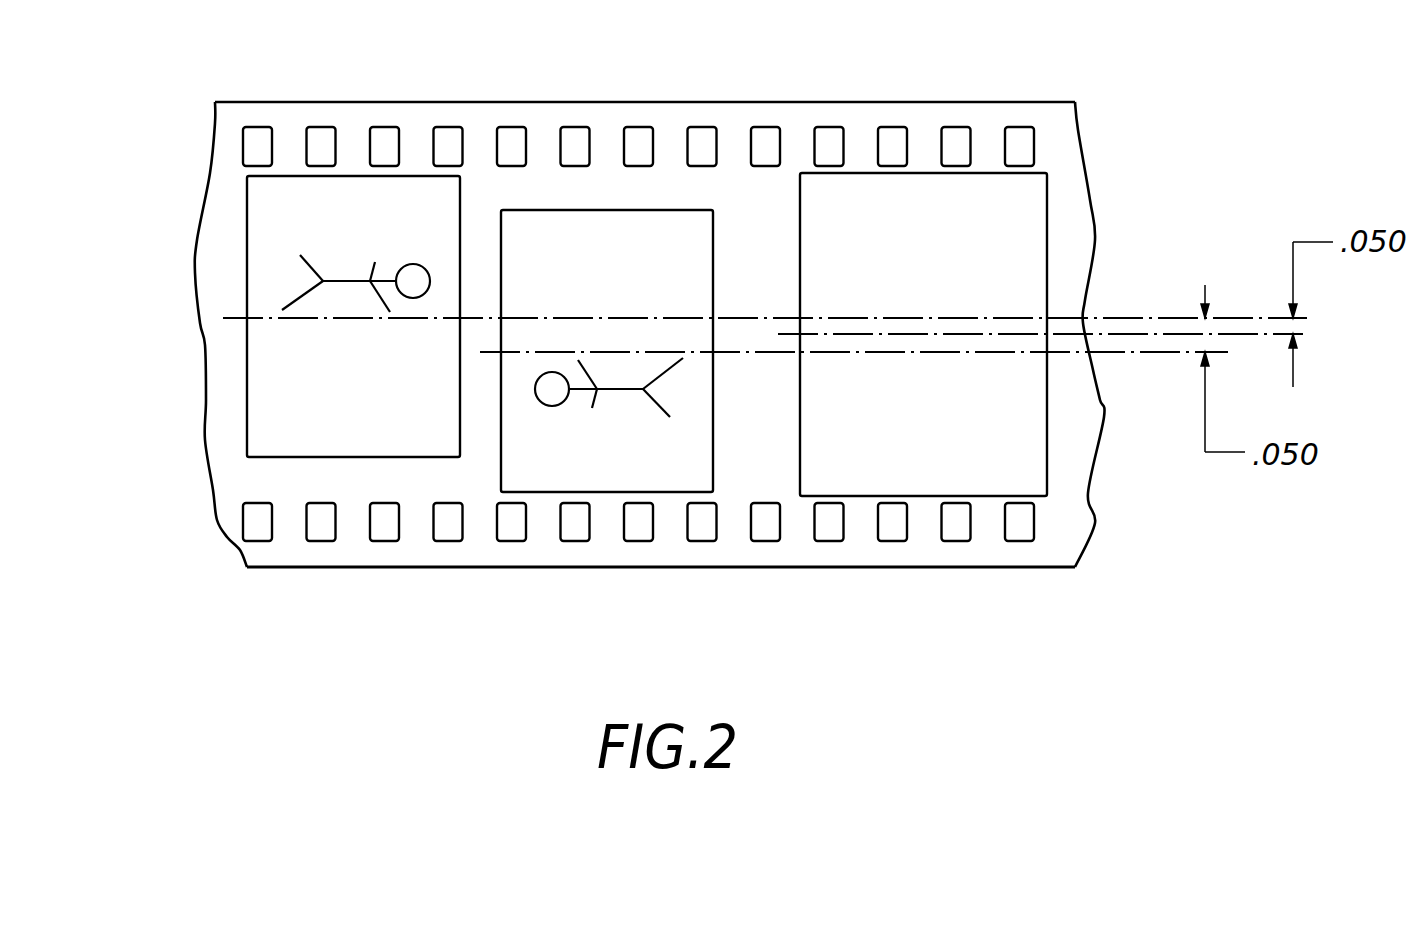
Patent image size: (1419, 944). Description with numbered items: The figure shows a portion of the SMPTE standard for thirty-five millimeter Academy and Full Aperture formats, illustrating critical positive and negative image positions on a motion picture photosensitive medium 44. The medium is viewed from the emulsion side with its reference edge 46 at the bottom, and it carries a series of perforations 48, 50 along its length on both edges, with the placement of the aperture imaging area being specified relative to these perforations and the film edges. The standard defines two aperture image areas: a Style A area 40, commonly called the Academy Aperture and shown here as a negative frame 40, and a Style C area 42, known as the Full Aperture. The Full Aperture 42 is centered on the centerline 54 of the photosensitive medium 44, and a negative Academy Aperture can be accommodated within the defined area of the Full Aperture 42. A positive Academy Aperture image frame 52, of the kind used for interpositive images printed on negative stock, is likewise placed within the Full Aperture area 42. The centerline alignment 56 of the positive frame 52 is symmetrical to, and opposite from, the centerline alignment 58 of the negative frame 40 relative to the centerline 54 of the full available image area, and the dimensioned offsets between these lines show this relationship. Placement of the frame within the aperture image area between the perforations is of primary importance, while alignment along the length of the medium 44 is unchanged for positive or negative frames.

The Style A aperture image area 40 is at (268, 458).
The Style C aperture image area 42 is at (862, 496).
The motion picture photosensitive medium 44 is at (212, 273).
The reference edge 46 is at (640, 567).
The perforations 48 is at (895, 541).
The perforations 50 is at (636, 128).
The positive Academy Aperture image frame 52 is at (550, 210).
The centerline 54 is at (1305, 334).
The centerline alignment 56 is at (1135, 352).
The centerline alignment 58 is at (1262, 318).